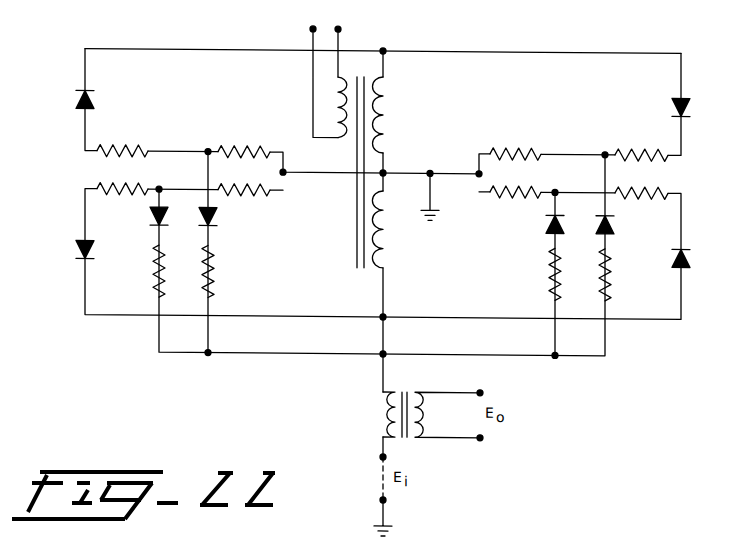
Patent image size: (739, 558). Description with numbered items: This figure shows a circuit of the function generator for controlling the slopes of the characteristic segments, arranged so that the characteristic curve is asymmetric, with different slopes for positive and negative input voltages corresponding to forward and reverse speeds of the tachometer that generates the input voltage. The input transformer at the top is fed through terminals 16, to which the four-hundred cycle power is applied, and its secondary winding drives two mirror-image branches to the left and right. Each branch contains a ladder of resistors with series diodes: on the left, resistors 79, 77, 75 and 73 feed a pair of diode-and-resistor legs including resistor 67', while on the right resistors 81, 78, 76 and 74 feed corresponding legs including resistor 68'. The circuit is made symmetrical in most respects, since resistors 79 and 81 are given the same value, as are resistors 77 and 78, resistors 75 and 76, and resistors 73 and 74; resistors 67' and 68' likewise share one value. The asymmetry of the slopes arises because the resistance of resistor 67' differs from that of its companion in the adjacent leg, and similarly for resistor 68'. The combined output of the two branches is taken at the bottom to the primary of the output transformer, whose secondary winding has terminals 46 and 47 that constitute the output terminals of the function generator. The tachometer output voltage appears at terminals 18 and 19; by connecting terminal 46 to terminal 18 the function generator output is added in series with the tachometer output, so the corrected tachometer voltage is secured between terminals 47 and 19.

The terminals 16 is at (315, 28).
The resistor 79 is at (134, 151).
The resistor 77 is at (258, 151).
The resistor 78 is at (506, 151).
The resistor 81 is at (637, 151).
The resistor 75 is at (125, 195).
The resistor 73 is at (256, 196).
The resistor 74 is at (507, 197).
The resistor 76 is at (645, 197).
The resistor 67' is at (225, 271).
The resistor 68' is at (625, 275).
The output terminal 47 is at (483, 392).
The output terminal 46 is at (483, 438).
The tachometer output terminal 18 is at (387, 458).
The tachometer output terminal 19 is at (387, 501).